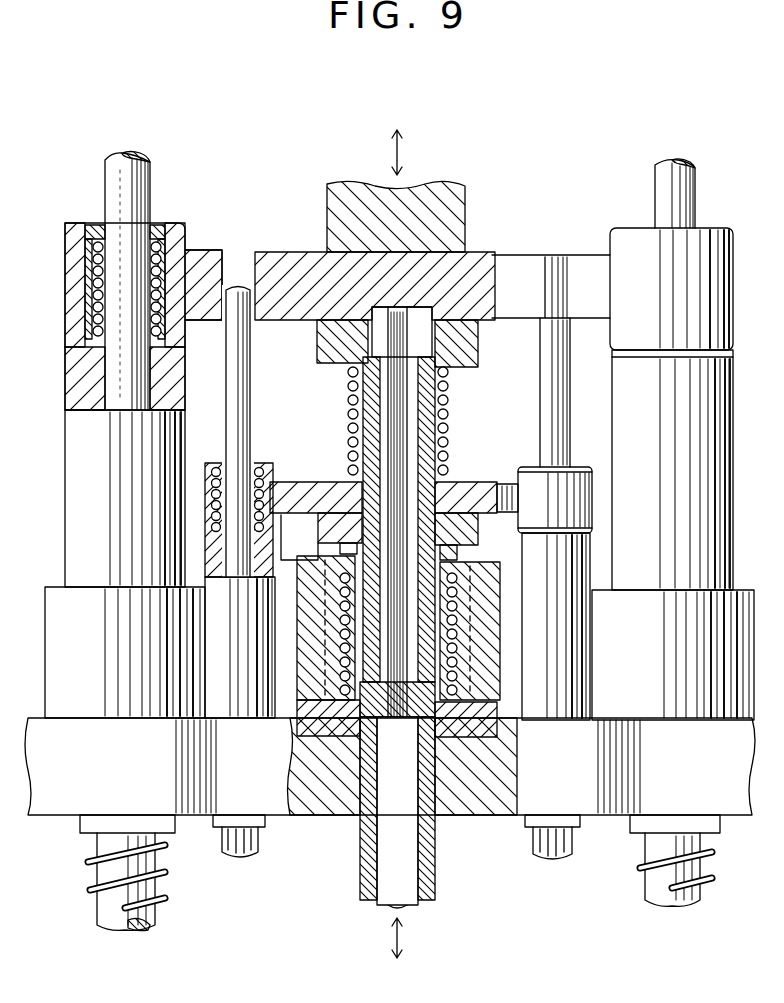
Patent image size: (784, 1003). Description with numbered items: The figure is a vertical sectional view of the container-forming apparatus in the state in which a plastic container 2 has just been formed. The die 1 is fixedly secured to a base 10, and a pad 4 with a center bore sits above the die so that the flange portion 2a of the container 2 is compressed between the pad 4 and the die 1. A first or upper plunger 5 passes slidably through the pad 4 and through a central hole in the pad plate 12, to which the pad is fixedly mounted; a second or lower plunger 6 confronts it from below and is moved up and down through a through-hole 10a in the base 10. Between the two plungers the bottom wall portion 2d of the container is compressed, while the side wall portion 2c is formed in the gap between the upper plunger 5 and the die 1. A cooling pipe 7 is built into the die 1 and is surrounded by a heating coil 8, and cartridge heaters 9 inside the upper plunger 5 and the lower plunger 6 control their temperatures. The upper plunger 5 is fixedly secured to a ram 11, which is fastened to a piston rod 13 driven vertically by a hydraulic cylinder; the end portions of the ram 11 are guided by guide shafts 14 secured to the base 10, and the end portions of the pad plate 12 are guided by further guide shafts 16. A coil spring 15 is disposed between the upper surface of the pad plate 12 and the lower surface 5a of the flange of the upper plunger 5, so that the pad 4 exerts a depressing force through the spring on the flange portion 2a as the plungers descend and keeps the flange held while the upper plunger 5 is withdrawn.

The die 1 is at (462, 625).
The plastic container 2 is at (447, 562).
The flange portion 2a is at (340, 549).
The side wall portion 2c is at (466, 719).
The bottom wall portion 2d is at (397, 793).
The pad 4 is at (330, 540).
The first plunger 5 is at (426, 432).
The lower surface of the flange of the upper plunger 5a is at (470, 370).
The second plunger 6 is at (430, 832).
The cooling pipe 7 is at (458, 592).
The heating coil 8 is at (322, 610).
The cartridge heater 9 is at (400, 350).
The base 10 is at (600, 818).
The through-hole 10a is at (355, 800).
The ram 11 is at (545, 258).
The pad plate 12 is at (484, 485).
The piston rod 13 is at (462, 206).
The guide shaft 14 is at (150, 186).
The coil spring 15 is at (348, 410).
The guide shaft 16 is at (542, 418).